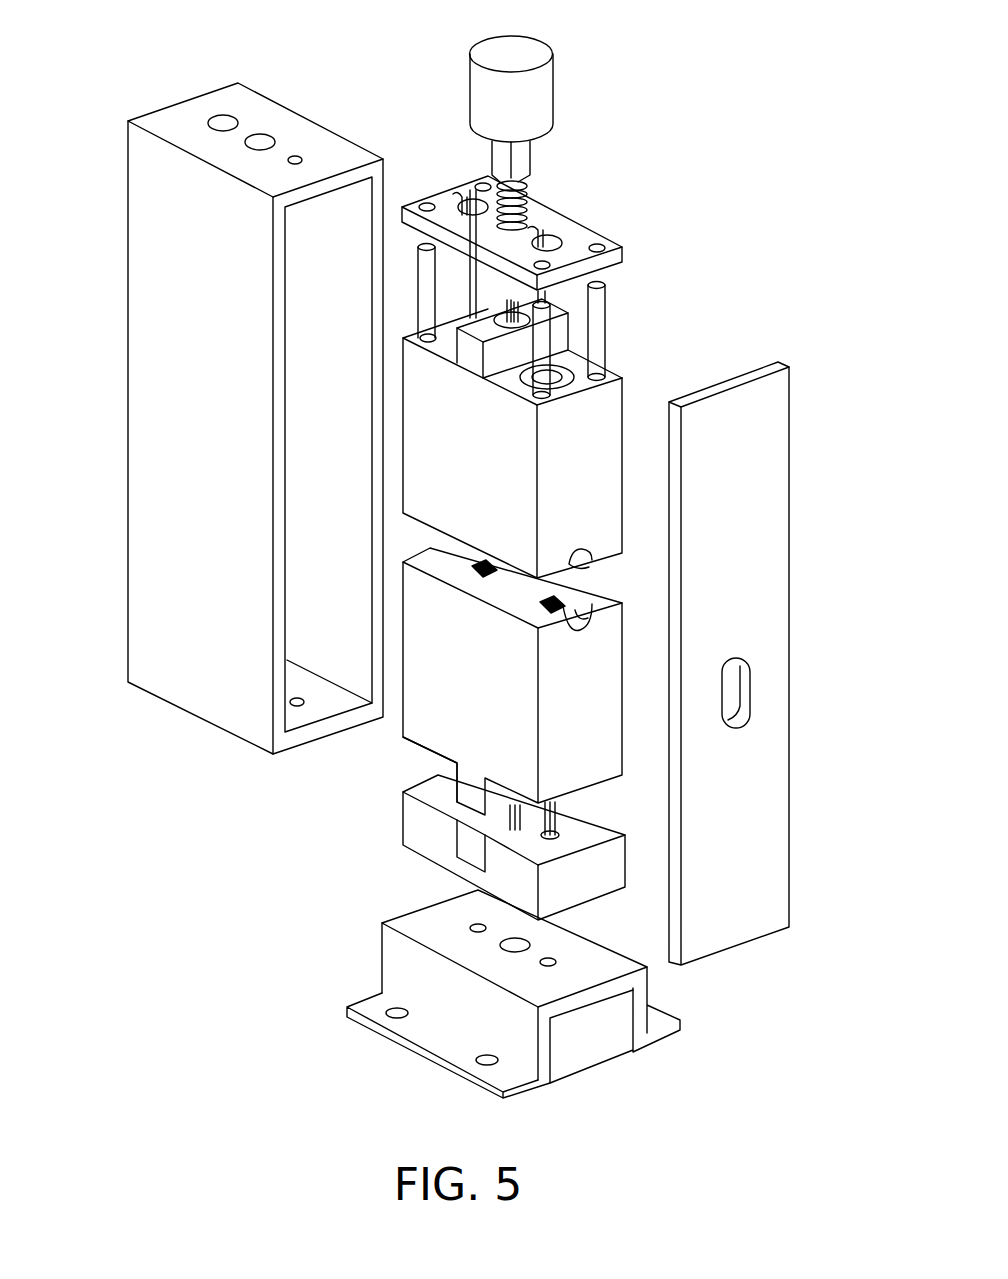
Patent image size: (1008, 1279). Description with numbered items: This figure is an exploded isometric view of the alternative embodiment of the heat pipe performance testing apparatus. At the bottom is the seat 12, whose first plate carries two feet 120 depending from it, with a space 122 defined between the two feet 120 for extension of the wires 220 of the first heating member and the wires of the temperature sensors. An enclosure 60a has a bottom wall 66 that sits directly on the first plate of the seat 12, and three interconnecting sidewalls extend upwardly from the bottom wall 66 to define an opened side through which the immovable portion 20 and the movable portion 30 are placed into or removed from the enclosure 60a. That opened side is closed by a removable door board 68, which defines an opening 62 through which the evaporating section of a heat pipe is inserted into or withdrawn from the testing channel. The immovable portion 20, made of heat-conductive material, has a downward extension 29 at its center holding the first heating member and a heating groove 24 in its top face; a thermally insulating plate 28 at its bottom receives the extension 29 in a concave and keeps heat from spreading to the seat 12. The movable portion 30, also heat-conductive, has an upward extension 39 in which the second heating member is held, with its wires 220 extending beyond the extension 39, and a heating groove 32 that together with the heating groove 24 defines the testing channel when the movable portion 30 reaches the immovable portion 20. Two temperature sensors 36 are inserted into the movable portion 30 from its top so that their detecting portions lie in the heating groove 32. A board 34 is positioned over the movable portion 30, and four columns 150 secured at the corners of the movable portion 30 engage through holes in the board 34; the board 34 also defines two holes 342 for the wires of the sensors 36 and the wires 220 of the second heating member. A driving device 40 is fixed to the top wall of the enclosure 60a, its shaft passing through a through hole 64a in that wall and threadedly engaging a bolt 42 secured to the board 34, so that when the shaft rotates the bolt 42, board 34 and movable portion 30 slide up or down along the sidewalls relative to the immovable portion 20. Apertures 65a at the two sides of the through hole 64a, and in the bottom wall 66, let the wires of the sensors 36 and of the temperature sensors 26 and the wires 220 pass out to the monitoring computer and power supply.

The seat 12 is at (474, 1005).
The feet 120 is at (370, 1003).
The space 122 is at (582, 1062).
The immovable portion 20 is at (515, 691).
The heating groove 24 is at (580, 613).
The temperature sensors 26 is at (562, 605).
The thermally insulating plate 28 is at (573, 880).
The extension 29 is at (470, 785).
The movable portion 30 is at (545, 415).
The heating groove 32 is at (590, 560).
The board 34 is at (540, 247).
The holes 342 is at (557, 240).
The temperature sensors 36 is at (565, 383).
The extension 39 is at (571, 338).
The driving device 40 is at (525, 98).
The bolt 42 is at (523, 203).
The columns 150 is at (600, 307).
The wires 220 is at (548, 328).
The enclosure 60a is at (232, 430).
The opening 62 is at (745, 682).
The through hole 64a is at (262, 140).
The apertures 65a is at (226, 120).
The bottom wall 66 is at (333, 707).
The door board 68 is at (763, 663).